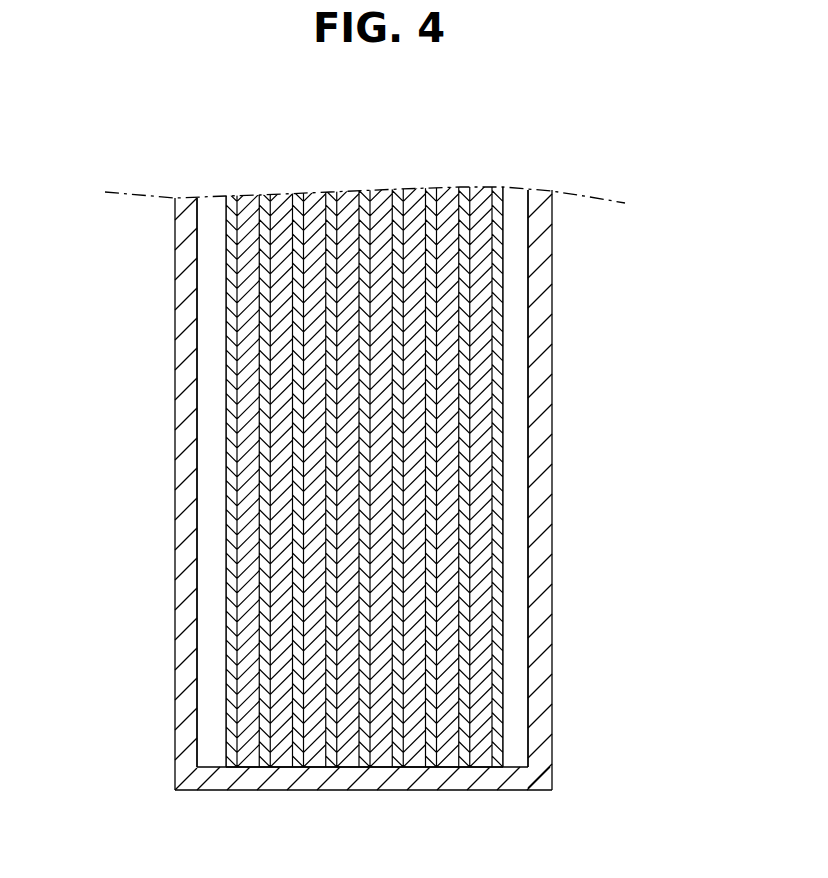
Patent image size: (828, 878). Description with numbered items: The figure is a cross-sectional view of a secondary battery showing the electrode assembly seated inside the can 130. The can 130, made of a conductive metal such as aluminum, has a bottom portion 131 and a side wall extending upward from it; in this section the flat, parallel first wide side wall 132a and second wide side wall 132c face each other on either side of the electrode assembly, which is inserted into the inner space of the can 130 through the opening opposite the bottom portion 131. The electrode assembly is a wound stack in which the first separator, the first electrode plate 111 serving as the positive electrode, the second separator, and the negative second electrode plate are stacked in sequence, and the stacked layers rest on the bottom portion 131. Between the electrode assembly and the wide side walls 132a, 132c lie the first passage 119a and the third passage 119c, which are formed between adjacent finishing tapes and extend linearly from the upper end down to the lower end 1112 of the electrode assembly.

The first electrode plate 111 is at (407, 482).
The lower end of the electrode assembly 1112 is at (363, 767).
The can 130 is at (373, 523).
The bottom portion 131 is at (430, 792).
The first wide side wall 132a is at (548, 460).
The second wide side wall 132c is at (175, 456).
The first passage 119a is at (537, 560).
The third passage 119c is at (190, 561).